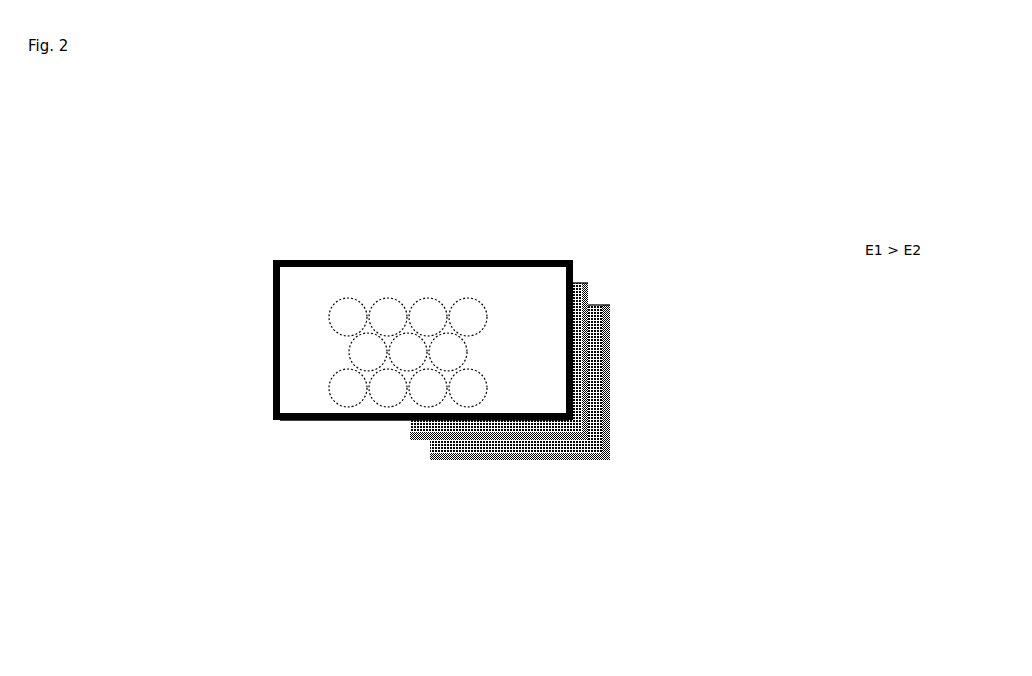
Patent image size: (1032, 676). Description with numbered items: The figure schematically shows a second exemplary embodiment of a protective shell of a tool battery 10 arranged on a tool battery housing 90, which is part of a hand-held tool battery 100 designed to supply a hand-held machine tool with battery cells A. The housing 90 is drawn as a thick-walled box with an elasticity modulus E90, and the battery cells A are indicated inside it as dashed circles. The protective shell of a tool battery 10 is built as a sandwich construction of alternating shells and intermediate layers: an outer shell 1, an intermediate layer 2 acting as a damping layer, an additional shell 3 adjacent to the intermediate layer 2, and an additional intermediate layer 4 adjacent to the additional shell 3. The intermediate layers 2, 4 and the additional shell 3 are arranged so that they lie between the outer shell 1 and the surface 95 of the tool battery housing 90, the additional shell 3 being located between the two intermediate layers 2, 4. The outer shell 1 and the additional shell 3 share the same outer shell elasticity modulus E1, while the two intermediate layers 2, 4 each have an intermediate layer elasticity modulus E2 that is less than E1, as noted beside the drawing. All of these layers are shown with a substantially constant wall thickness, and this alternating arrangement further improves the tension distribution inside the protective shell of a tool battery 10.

The hand-held tool battery 100 is at (450, 197).
The tool battery housing 90 is at (275, 422).
The elasticity modulus of the tool battery housing E90 is at (547, 262).
The surface 95 is at (427, 422).
The battery cells A is at (352, 310).
The protective shell of a tool battery 10 is at (573, 522).
The additional intermediate layer 4 is at (455, 428).
The additional shell 3 is at (587, 292).
The intermediate layer 2 is at (597, 437).
The outer shell 1 is at (607, 367).
The intermediate layer elasticity modulus E2 is at (575, 282).
The outer shell elasticity modulus E1 is at (586, 286).